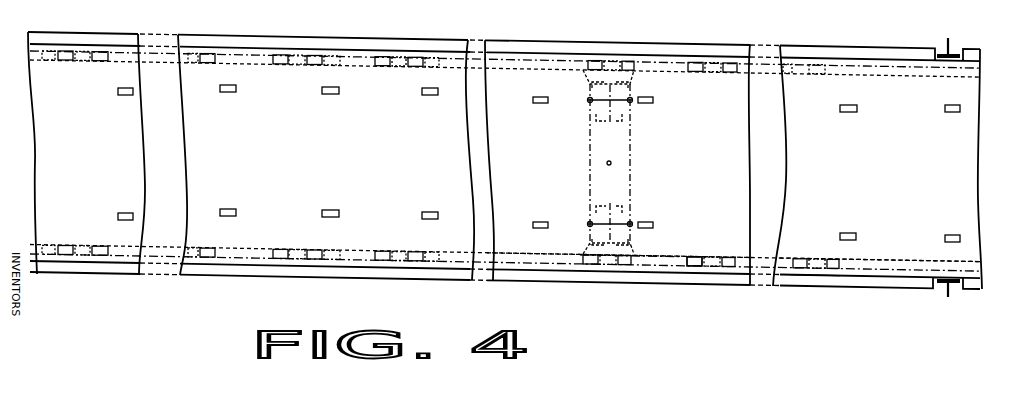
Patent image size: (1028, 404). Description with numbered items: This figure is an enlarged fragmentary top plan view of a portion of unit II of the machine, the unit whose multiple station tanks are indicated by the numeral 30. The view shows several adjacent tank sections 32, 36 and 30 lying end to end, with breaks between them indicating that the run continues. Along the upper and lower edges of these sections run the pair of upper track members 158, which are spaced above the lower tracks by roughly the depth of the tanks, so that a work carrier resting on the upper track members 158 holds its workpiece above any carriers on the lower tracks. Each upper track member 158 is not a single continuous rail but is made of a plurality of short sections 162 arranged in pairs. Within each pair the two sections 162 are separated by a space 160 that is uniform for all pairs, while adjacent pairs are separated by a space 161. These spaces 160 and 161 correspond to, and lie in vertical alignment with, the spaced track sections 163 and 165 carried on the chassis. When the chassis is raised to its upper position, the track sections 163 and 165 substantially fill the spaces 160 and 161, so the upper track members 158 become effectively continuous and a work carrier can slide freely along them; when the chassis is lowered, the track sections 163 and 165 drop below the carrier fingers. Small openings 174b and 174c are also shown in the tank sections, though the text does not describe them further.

The multiple station tank 30 is at (805, 90).
The rail section 32 is at (670, 87).
The rail section 36 is at (275, 80).
The upper track member 158 is at (881, 70).
The space 160 is at (810, 262).
The space 161 is at (835, 261).
The short section 162 is at (695, 268).
The track section 163 is at (820, 240).
The track section 165 is at (646, 260).
The slot 174b is at (847, 113).
The slot 174c is at (950, 232).